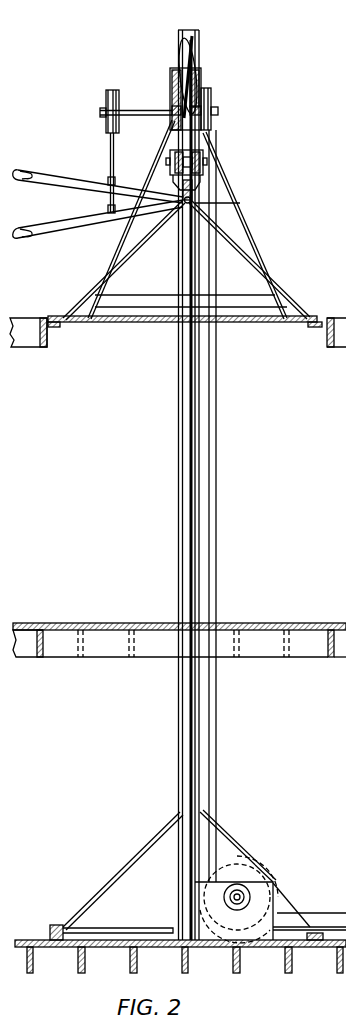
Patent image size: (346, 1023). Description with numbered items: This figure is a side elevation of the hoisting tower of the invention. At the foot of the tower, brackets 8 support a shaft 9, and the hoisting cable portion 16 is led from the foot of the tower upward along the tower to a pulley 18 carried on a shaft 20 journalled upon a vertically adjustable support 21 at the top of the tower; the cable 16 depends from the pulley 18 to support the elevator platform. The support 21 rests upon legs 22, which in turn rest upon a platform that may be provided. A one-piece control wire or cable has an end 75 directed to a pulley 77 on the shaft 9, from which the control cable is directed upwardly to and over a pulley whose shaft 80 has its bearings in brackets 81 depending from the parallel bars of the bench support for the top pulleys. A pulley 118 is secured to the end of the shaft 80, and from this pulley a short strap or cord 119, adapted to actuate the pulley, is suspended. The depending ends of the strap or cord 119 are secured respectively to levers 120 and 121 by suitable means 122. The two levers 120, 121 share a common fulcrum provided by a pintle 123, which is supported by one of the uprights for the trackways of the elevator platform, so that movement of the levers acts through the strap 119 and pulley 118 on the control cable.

The brackets 8 is at (250, 933).
The shaft 9 is at (245, 895).
The cable portion 16 is at (205, 762).
The pulley 18 is at (192, 60).
The shaft 20 is at (173, 75).
The vertically adjustable support 21 is at (173, 83).
The legs 22 is at (115, 250).
The control cable end 75 is at (220, 807).
The pulley 77 is at (237, 880).
The shaft 80 is at (160, 113).
The brackets 81 is at (175, 110).
The pulley 118 is at (108, 90).
The strap or cord 119 is at (108, 143).
The lever 120 is at (55, 182).
The lever 121 is at (38, 230).
The securing means 122 is at (115, 180).
The pintle 123 is at (175, 215).